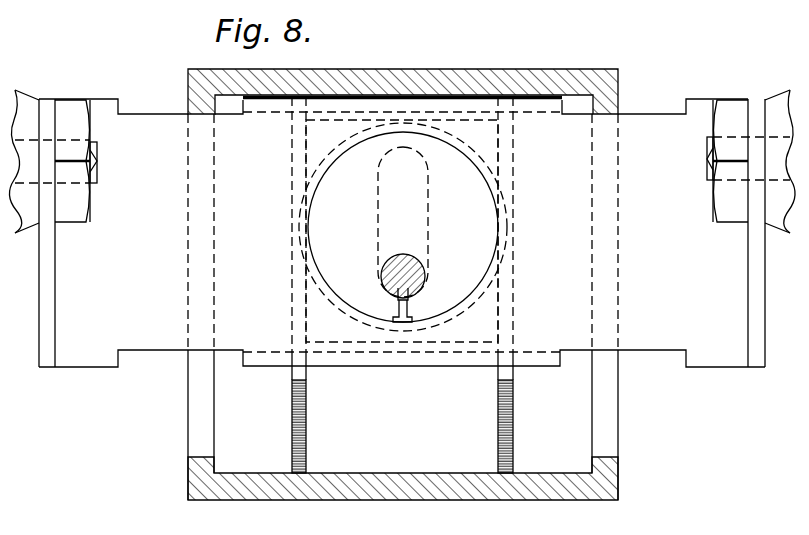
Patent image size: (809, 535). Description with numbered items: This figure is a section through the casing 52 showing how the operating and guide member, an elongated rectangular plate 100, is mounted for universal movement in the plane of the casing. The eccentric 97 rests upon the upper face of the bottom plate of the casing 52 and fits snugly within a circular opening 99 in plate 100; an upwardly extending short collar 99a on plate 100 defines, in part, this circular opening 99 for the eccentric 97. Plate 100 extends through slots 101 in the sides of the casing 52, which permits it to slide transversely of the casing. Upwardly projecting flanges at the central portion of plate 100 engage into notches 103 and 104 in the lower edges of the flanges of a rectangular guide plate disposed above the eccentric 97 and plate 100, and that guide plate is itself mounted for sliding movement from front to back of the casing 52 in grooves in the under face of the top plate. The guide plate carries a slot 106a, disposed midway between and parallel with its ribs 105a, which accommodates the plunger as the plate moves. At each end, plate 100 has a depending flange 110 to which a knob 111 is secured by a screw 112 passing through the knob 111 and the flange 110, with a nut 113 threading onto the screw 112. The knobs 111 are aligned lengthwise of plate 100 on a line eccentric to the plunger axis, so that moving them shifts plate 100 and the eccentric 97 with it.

The casing 52 is at (440, 490).
The eccentric 97 is at (460, 248).
The circular opening 99 is at (330, 172).
The collar 99a is at (489, 282).
The operating and guide member 100 is at (650, 122).
The slots 101 is at (606, 447).
The notch 103 is at (300, 372).
The notch 104 is at (313, 102).
The guide pin 105a is at (298, 431).
The slot 106a is at (383, 236).
The depending flange 110 is at (48, 298).
The knobs 111 is at (25, 104).
The screws 112 is at (98, 141).
The nuts 113 is at (78, 205).